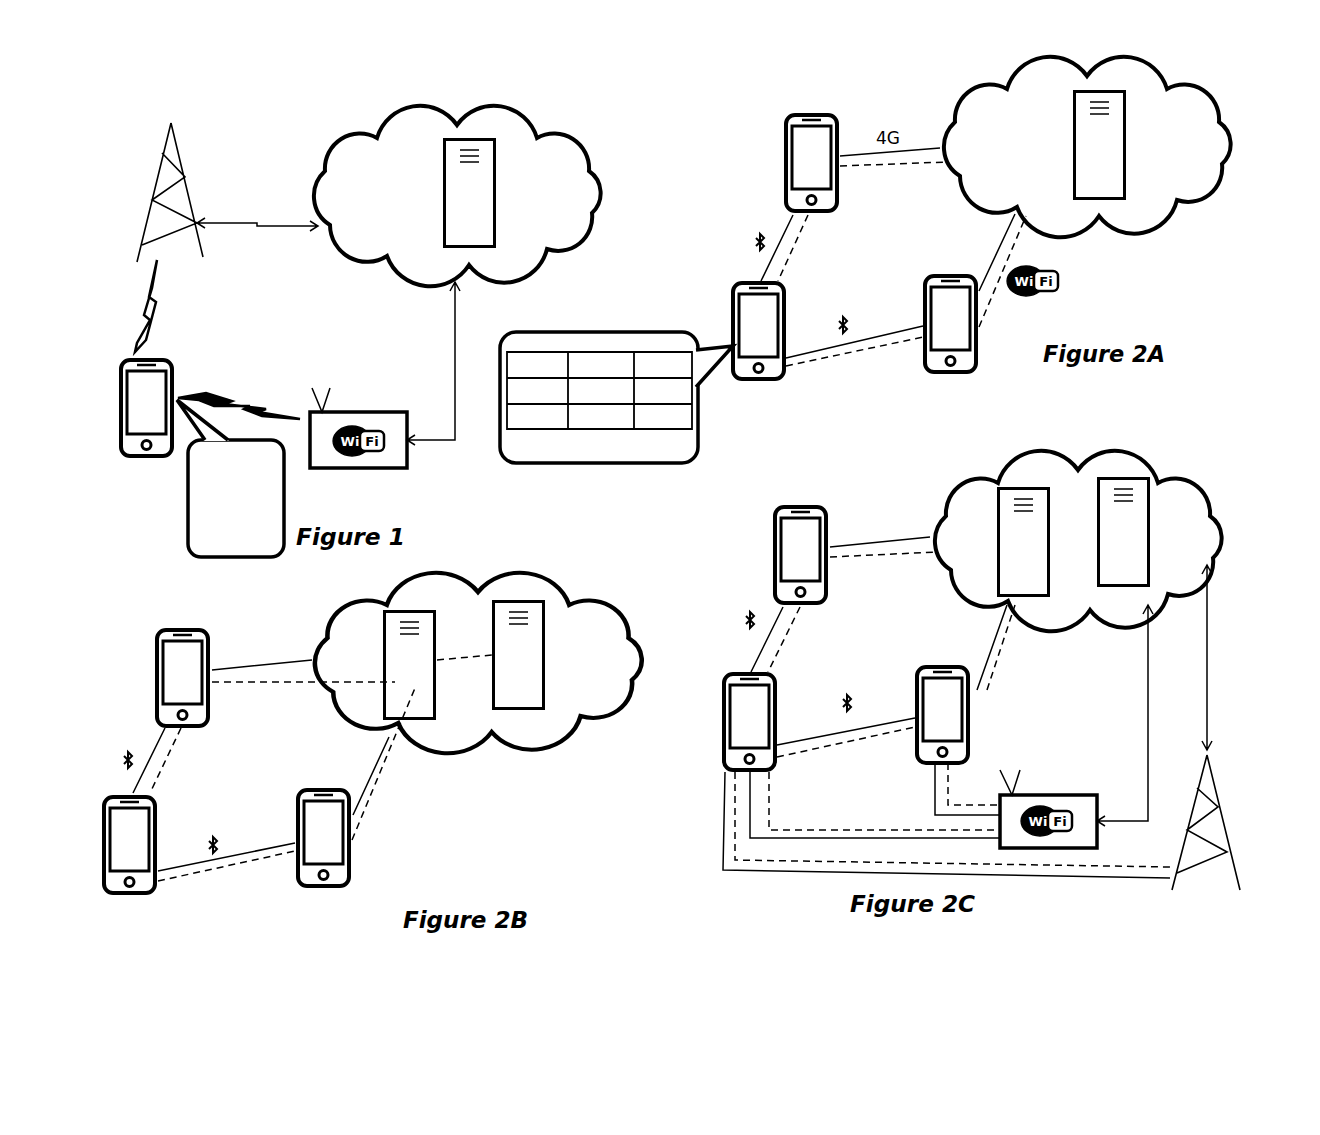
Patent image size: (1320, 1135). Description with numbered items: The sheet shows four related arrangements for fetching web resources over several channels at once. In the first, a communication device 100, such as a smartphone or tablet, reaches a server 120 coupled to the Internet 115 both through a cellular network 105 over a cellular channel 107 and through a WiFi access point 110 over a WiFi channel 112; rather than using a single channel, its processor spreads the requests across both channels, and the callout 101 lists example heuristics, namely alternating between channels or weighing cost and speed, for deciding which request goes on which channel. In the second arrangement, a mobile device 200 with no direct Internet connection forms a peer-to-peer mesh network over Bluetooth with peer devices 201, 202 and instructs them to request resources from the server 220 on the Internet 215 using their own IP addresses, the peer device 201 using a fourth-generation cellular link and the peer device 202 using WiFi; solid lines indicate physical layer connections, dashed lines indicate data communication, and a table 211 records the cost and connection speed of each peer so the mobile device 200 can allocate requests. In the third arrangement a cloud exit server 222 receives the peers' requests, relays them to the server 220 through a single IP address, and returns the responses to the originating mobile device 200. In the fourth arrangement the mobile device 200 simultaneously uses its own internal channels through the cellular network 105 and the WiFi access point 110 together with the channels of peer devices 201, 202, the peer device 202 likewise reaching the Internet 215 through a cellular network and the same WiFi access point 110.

In FIG. 1, the communication device 100 is at (133, 418).
In FIG. 1, the callout 101 is at (223, 544).
In FIG. 1, the cellular network 105 is at (176, 140).
In FIG. 2C, the cellular network 105 is at (1210, 772).
In FIG. 1, the cellular channel 107 is at (160, 296).
In FIG. 1, the WiFi access point 110 is at (348, 412).
In FIG. 2C, the WiFi access point 110 is at (1040, 795).
In FIG. 1, the WiFi channel 112 is at (228, 393).
In FIG. 1, the Internet 115 is at (587, 150).
In FIG. 1, the server 120 is at (456, 200).
In FIG. 2A, the mobile device 200 is at (745, 341).
In FIG. 2B, the mobile device 200 is at (116, 855).
In FIG. 2C, the mobile device 200 is at (736, 732).
In FIG. 2A, the peer device 201 is at (798, 173).
In FIG. 2B, the peer device 201 is at (169, 688).
In FIG. 2C, the peer device 201 is at (787, 565).
In FIG. 2A, the peer device 202 is at (937, 334).
In FIG. 2B, the peer device 202 is at (310, 848).
In FIG. 2C, the peer device 202 is at (929, 725).
In FIG. 2A, the table 211 is at (588, 455).
In FIG. 2A, the Internet 215 is at (1212, 105).
In FIG. 2B, the Internet 215 is at (630, 620).
In FIG. 2C, the Internet 215 is at (1207, 492).
In FIG. 2A, the server 220 is at (1086, 152).
In FIG. 2B, the server 220 is at (505, 662).
In FIG. 2C, the server 220 is at (1110, 539).
In FIG. 2B, the cloud exit server 222 is at (396, 672).
In FIG. 2C, the cloud exit server 222 is at (1010, 549).